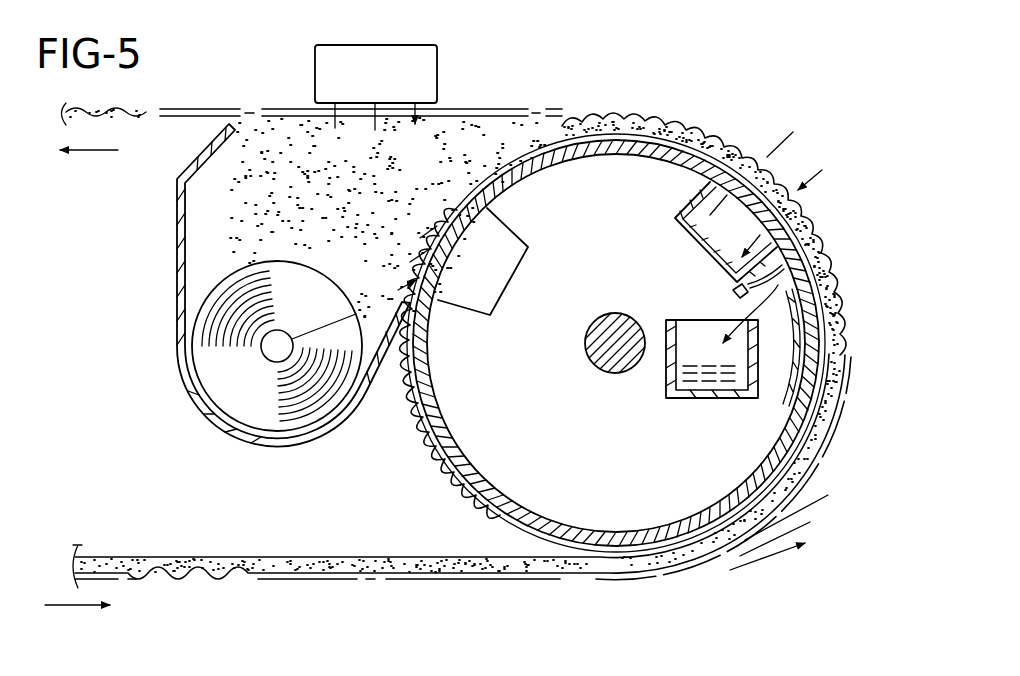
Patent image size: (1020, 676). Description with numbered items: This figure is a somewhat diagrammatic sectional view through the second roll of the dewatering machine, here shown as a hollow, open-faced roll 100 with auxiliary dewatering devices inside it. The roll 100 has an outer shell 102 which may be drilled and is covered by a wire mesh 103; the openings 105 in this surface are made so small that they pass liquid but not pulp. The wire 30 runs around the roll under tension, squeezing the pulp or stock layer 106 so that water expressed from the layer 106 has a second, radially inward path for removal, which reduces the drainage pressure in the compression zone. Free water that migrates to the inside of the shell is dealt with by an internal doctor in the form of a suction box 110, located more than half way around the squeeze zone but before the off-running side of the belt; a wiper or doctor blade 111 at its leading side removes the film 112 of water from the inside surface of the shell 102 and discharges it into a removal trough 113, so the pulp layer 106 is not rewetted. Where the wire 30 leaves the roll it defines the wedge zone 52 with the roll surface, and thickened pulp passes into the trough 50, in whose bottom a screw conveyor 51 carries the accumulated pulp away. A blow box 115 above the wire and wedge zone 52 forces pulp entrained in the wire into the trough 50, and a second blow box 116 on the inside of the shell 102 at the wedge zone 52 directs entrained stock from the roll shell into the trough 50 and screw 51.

The wire 30 is at (180, 109).
The blow box 115 is at (424, 68).
The wedge zone 52 is at (543, 128).
The trough 50 is at (177, 265).
The screw conveyor 51 is at (222, 386).
The roll 100 is at (440, 460).
The openings 105 is at (443, 395).
The outer shell 102 is at (455, 426).
The wire mesh 103 is at (490, 505).
The pulp layer 106 is at (245, 566).
The second blow box 116 is at (493, 278).
The suction box 110 is at (697, 244).
The doctor blade 111 is at (736, 287).
The removal trough 113 is at (663, 373).
The film of water 112 is at (790, 407).